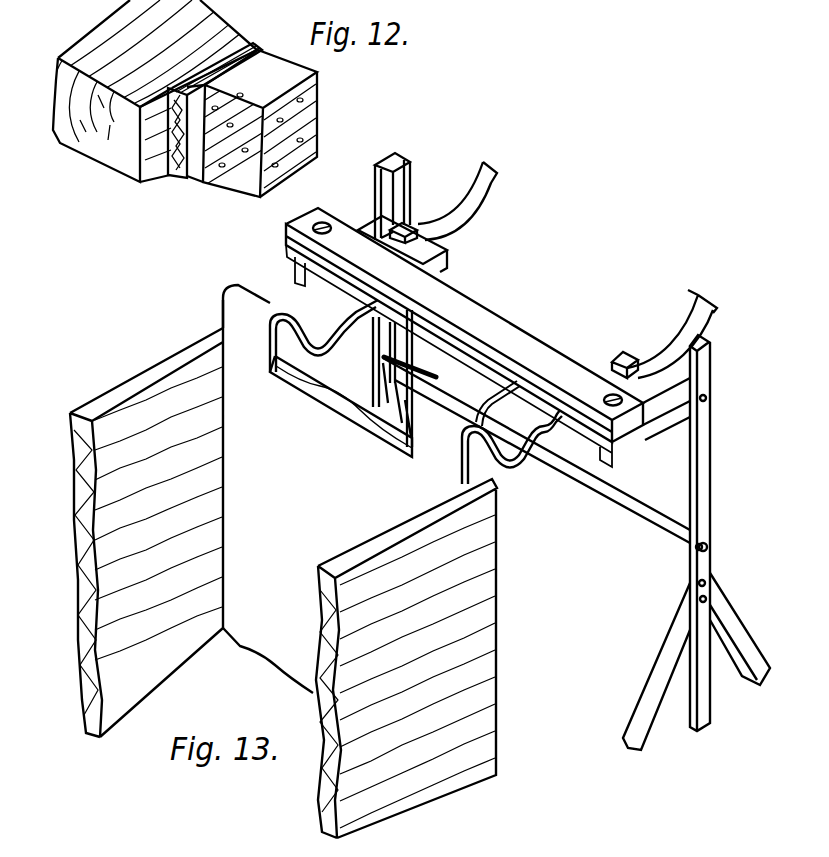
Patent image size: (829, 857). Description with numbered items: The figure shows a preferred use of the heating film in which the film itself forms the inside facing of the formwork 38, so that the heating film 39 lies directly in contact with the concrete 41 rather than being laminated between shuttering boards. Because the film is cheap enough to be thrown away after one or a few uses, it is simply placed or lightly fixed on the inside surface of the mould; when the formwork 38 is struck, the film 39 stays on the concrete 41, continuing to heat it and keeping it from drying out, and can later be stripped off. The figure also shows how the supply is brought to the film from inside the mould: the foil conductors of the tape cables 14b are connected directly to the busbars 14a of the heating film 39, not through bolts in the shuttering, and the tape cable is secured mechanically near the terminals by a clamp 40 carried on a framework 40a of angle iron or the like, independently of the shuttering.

In FIG. 12, the formwork 38 is at (102, 47).
In FIG. 13, the formwork 38 is at (160, 372).
In FIG. 12, the heating film 39 is at (193, 165).
In FIG. 13, the heating film 39 is at (345, 497).
In FIG. 12, the concrete 41 is at (307, 130).
In FIG. 13, the clamp 40 is at (523, 315).
In FIG. 13, the framework 40a is at (697, 485).
In FIG. 13, the busbars 14a is at (440, 253).
In FIG. 13, the tape cables 14b is at (480, 180).